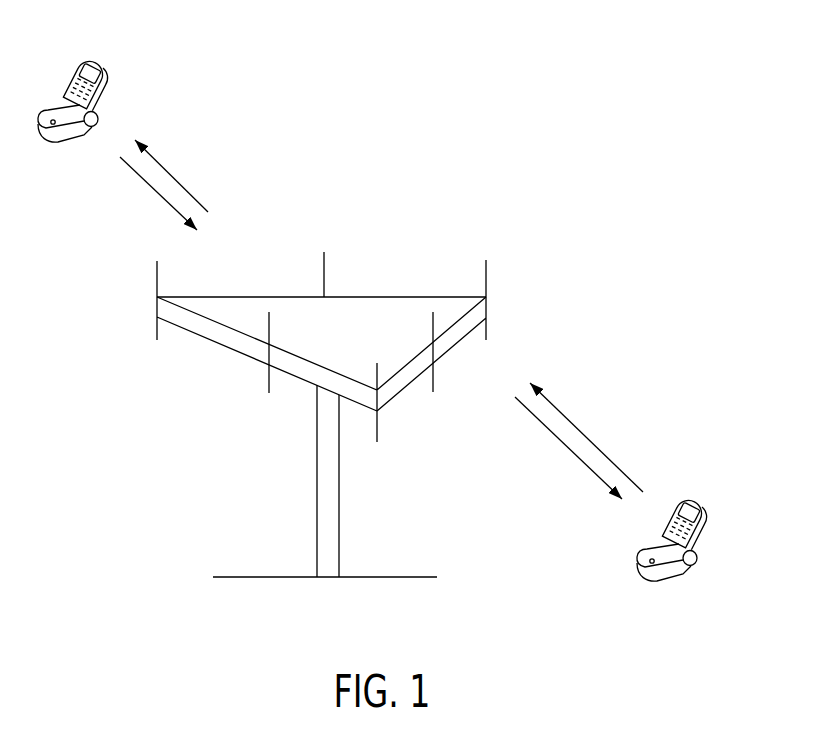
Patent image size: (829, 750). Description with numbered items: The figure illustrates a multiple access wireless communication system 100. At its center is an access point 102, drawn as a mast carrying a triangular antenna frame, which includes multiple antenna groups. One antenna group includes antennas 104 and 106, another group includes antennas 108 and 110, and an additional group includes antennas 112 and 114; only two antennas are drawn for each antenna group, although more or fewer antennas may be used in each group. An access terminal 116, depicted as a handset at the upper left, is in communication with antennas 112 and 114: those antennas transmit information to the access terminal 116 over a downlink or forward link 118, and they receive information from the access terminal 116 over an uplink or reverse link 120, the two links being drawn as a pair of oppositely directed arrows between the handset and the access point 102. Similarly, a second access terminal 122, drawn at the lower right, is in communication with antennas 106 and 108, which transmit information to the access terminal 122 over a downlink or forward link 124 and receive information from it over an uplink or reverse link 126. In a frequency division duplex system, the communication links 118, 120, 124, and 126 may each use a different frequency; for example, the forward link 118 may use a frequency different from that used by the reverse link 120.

The multiple access wireless communication system 100 is at (537, 90).
The access point 102 is at (328, 578).
The antenna 104 is at (486, 263).
The antenna 106 is at (434, 382).
The antenna 108 is at (378, 435).
The antenna 110 is at (268, 382).
The antenna 112 is at (158, 272).
The antenna 114 is at (324, 262).
The access terminal 116 is at (104, 66).
The downlink or forward link 118 is at (178, 182).
The uplink or reverse link 120 is at (160, 194).
The access terminal 122 is at (702, 507).
The downlink or forward link 124 is at (568, 450).
The uplink or reverse link 126 is at (586, 435).